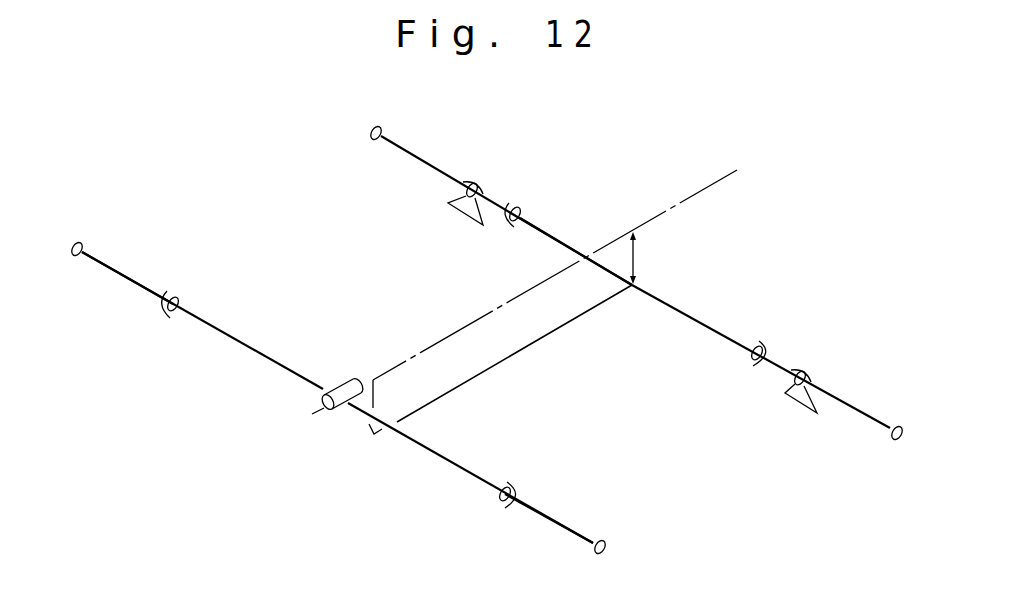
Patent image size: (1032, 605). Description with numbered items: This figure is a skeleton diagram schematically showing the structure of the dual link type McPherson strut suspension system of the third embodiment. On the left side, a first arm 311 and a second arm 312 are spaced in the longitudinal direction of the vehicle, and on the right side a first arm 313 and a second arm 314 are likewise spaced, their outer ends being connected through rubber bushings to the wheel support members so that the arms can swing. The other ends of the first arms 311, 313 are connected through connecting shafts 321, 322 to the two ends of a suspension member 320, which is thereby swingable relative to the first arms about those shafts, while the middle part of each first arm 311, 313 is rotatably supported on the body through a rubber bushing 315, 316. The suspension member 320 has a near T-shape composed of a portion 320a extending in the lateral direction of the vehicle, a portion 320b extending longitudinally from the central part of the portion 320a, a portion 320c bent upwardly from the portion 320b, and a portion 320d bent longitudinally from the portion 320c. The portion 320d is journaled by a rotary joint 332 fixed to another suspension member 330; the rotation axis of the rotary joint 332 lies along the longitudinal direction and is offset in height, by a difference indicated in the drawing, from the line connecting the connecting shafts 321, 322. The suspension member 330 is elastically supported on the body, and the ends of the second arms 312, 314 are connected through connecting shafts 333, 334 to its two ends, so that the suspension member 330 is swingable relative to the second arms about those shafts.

The first arm 311 is at (430, 162).
The second arm 312 is at (125, 273).
The first arm 313 is at (850, 405).
The second arm 314 is at (558, 520).
The rubber bushing 315 is at (467, 181).
The rubber bushing 316 is at (800, 369).
The suspension member 320 is at (716, 292).
The portion extending in the lateral direction 320a is at (567, 245).
The portion extending in the longitudinal direction 320b is at (578, 313).
The portion bent upwardly 320c is at (374, 384).
The portion bent in the longitudinal direction 320d is at (315, 413).
The connecting shaft 321 is at (516, 204).
The connecting shaft 322 is at (747, 359).
The suspension member 330 is at (233, 342).
The rotary joint 332 is at (343, 384).
The connecting shaft 333 is at (170, 314).
The connecting shaft 334 is at (502, 503).